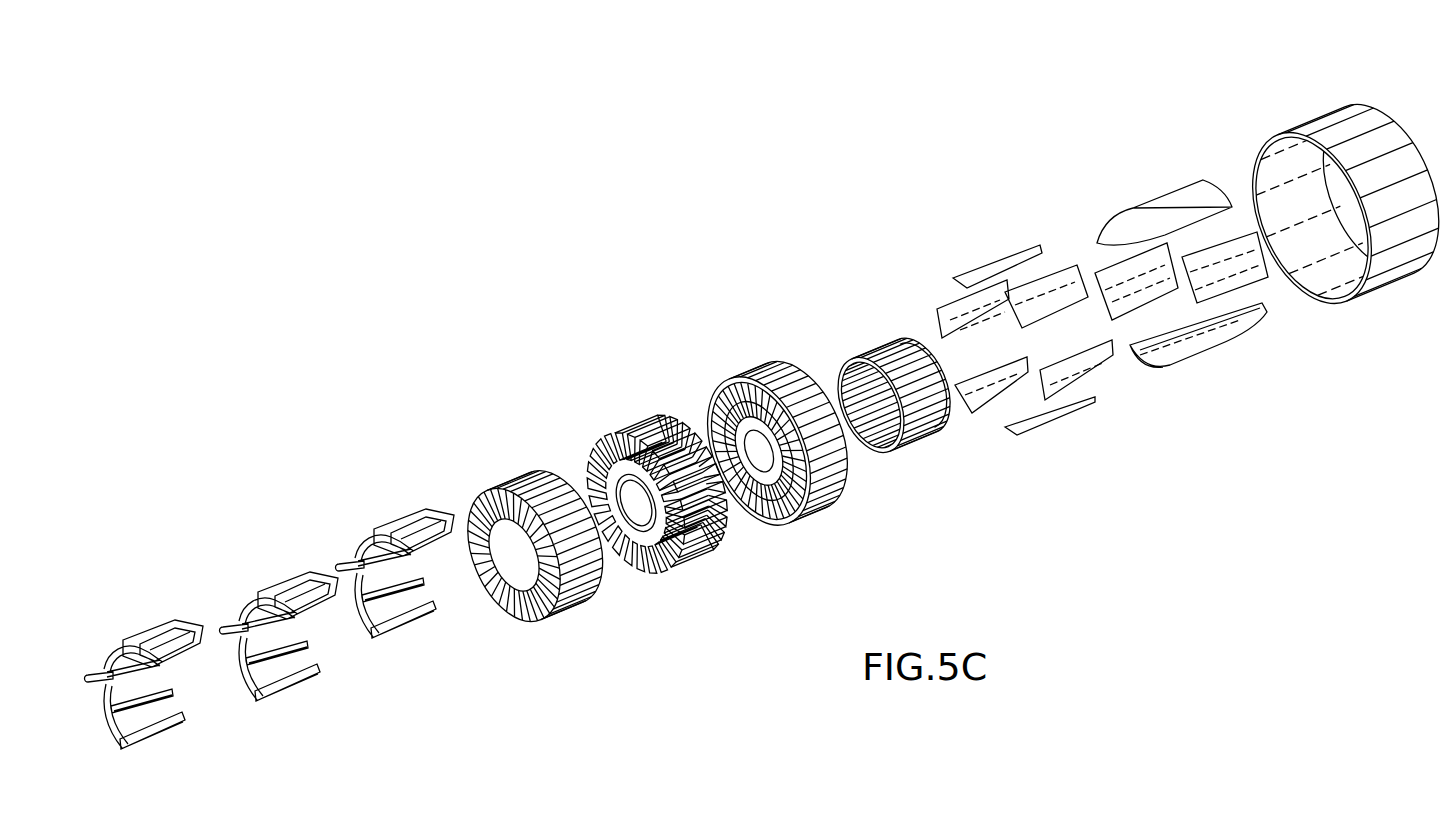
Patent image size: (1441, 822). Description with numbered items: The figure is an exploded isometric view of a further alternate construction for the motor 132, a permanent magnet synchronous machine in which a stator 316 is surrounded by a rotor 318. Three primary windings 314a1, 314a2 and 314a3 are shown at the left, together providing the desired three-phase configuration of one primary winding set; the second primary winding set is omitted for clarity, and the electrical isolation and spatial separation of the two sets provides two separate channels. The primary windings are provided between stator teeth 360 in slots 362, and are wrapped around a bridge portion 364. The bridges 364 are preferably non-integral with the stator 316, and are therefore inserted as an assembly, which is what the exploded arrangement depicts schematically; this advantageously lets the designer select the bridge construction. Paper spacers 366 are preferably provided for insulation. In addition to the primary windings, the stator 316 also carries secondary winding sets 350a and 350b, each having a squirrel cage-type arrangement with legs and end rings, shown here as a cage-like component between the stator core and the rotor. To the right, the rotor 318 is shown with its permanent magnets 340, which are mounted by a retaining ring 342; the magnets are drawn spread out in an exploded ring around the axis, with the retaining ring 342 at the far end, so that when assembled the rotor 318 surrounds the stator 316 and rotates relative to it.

The motor 132 is at (540, 312).
The primary winding 314a1 is at (158, 617).
The primary winding 314a2 is at (273, 577).
The primary winding 314a3 is at (402, 520).
The stator 316 is at (758, 370).
The bridge portion 364 is at (512, 482).
The paper spacer 366 is at (632, 425).
The stator tooth 360 is at (810, 483).
The slot 362 is at (798, 487).
The secondary winding set 350a is at (890, 348).
The secondary winding set 350b is at (940, 427).
The rotor 318 is at (1362, 96).
The permanent magnet 340 is at (1225, 342).
The retaining ring 342 is at (1388, 262).